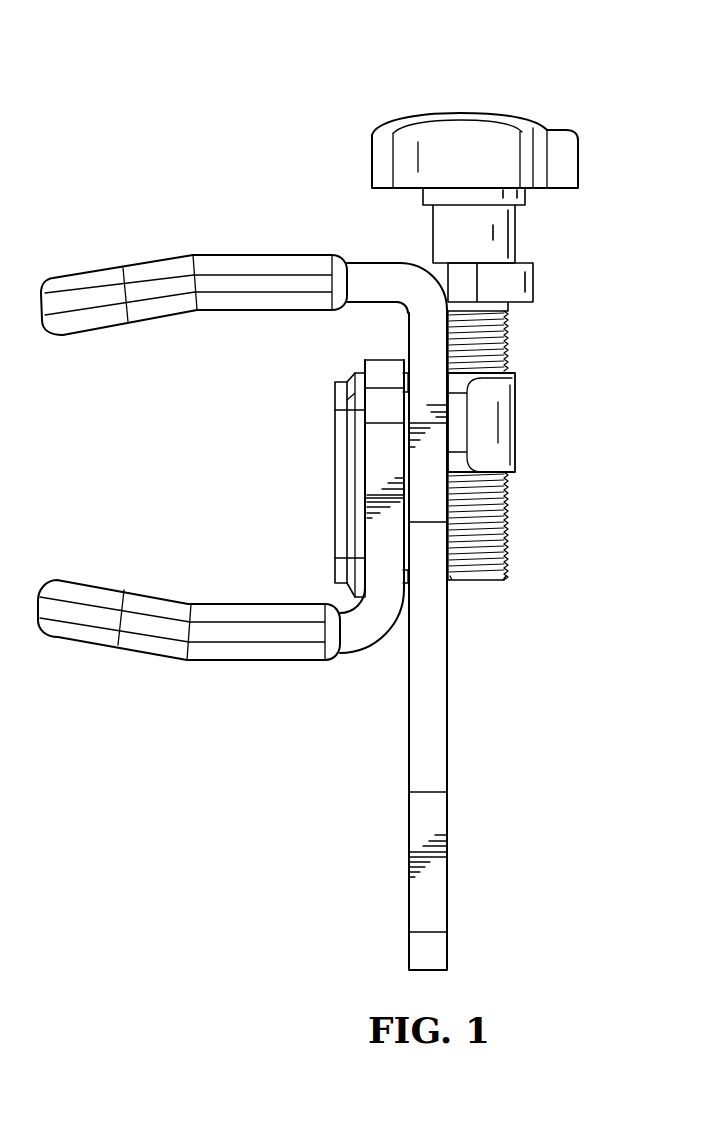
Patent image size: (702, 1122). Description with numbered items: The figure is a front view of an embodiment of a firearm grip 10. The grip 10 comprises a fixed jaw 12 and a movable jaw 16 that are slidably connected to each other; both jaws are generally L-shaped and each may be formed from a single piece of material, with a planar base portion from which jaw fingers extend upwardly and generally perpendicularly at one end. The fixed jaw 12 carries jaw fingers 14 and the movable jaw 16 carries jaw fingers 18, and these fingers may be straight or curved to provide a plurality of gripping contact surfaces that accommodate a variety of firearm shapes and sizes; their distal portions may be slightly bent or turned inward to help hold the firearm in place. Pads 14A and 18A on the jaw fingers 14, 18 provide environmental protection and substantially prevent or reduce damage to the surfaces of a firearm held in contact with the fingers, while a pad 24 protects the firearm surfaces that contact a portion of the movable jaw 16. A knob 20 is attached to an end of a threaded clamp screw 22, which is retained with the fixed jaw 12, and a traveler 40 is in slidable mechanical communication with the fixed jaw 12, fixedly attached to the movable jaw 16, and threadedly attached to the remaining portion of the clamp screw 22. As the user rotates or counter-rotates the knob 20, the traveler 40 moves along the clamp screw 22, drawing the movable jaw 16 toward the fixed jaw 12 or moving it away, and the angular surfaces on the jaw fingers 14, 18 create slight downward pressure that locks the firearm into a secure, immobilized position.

The firearm grip 10 is at (112, 89).
The fixed jaw 12 is at (448, 897).
The jaw fingers 14 is at (194, 300).
The pads 14A is at (90, 320).
The movable jaw 16 is at (367, 640).
The jaw fingers 18 is at (189, 619).
The pads 18A is at (85, 595).
The knob 20 is at (470, 113).
The threaded clamp screw 22 is at (507, 345).
The pad 24 is at (335, 497).
The traveler 40 is at (516, 425).